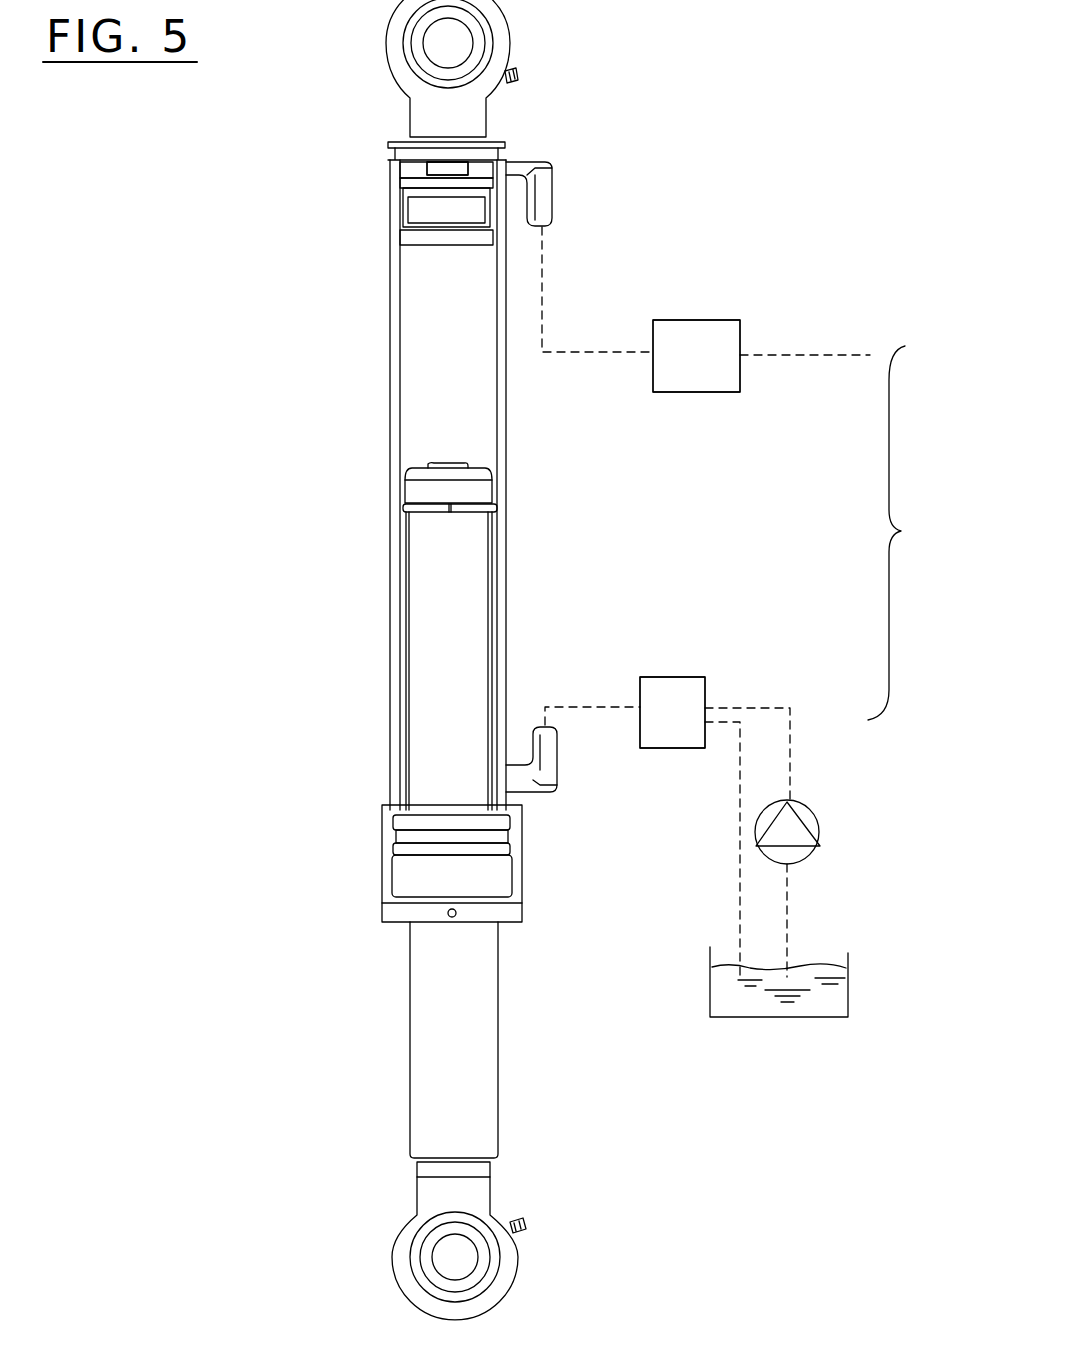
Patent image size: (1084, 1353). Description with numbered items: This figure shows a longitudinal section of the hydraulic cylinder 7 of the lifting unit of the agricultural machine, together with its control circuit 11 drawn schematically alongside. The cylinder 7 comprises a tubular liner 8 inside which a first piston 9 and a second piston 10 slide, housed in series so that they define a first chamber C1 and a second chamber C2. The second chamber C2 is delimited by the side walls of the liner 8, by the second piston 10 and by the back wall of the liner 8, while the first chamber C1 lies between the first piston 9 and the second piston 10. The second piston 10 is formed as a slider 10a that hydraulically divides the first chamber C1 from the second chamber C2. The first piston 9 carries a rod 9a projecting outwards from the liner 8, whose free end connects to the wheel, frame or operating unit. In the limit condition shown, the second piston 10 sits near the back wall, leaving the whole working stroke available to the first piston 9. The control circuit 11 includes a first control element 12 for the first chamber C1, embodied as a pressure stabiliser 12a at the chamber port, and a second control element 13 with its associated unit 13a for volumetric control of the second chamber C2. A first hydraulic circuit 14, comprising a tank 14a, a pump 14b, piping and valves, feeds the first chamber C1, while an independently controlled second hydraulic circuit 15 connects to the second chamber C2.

The hydraulic cylinder 7 is at (619, 263).
The tubular liner 8 is at (388, 388).
The first piston 9 is at (439, 698).
The rod 9a is at (428, 1022).
The second piston 10 is at (419, 213).
The slider 10a is at (470, 208).
The control circuit 11 is at (844, 533).
The first control element 12 is at (691, 654).
The pressure stabiliser 12a is at (672, 712).
The second control element 13 is at (721, 300).
The sensor 13a is at (696, 356).
The first hydraulic circuit 14 is at (593, 707).
The tank 14a is at (822, 967).
The pump 14b is at (818, 820).
The second hydraulic circuit 15 is at (588, 353).
The first chamber C1 is at (423, 347).
The second chamber C2 is at (407, 170).